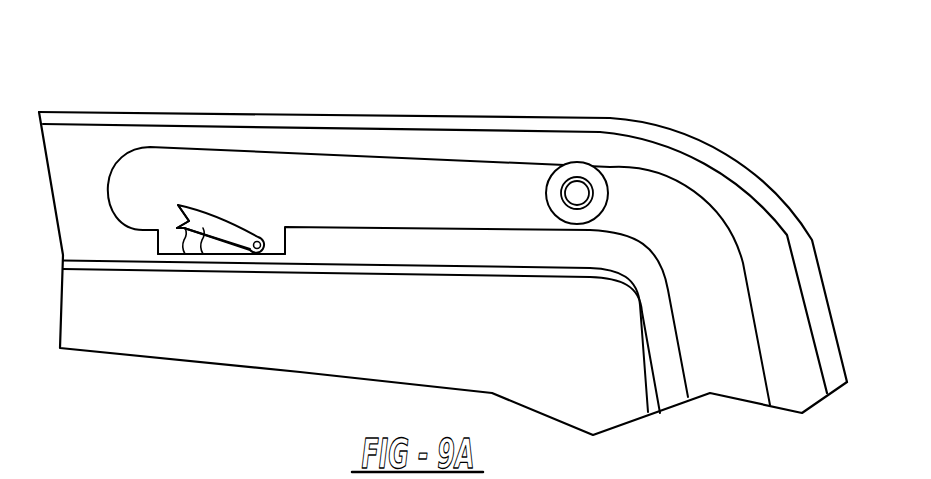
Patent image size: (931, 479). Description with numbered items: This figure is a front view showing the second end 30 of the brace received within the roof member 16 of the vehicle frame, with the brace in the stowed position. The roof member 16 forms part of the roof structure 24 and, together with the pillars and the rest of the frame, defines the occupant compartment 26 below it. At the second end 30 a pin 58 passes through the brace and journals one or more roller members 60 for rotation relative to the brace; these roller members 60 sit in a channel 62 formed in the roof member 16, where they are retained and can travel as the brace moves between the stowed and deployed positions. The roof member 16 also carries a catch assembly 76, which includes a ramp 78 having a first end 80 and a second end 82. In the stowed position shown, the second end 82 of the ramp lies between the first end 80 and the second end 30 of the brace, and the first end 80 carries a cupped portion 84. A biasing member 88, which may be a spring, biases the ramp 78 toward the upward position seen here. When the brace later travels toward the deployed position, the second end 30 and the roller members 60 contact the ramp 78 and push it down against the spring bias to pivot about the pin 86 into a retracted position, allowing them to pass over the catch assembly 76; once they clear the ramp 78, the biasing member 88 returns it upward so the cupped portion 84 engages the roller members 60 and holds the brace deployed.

The roof member 16 is at (173, 110).
The roof structure 24 is at (348, 112).
The occupant compartment 26 is at (383, 340).
The second end 30 is at (708, 338).
The pin 58 is at (565, 182).
The roller members 60 is at (603, 175).
The channel 62 is at (413, 180).
The catch assembly 76 is at (263, 250).
The ramp 78 is at (236, 228).
The first end 80 is at (193, 217).
The second end 82 is at (242, 236).
The cupped portion 84 is at (183, 217).
The pin 86 is at (258, 240).
The biasing member 88 is at (197, 256).